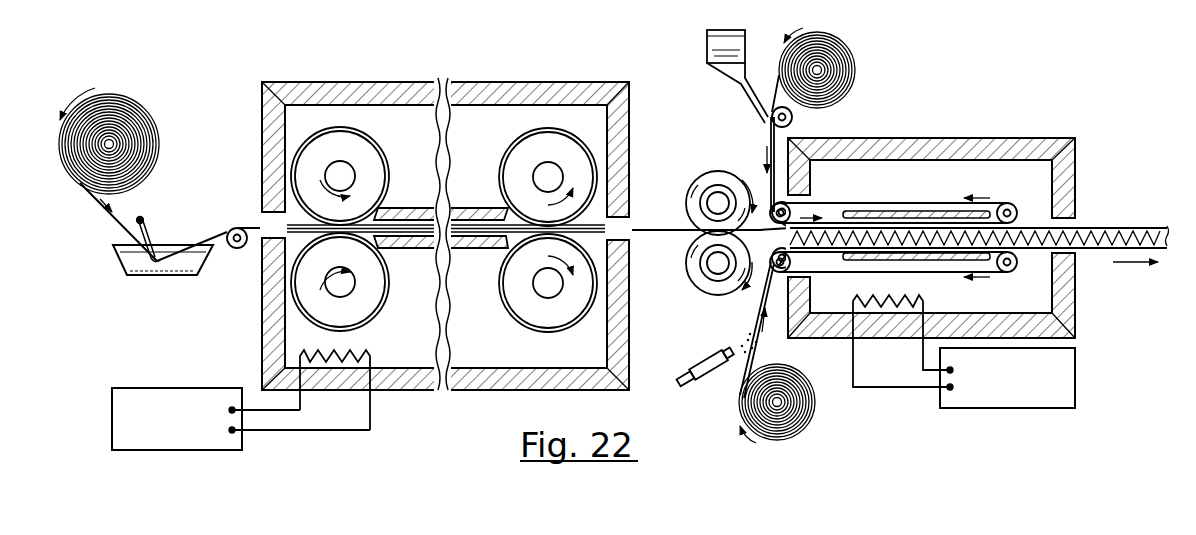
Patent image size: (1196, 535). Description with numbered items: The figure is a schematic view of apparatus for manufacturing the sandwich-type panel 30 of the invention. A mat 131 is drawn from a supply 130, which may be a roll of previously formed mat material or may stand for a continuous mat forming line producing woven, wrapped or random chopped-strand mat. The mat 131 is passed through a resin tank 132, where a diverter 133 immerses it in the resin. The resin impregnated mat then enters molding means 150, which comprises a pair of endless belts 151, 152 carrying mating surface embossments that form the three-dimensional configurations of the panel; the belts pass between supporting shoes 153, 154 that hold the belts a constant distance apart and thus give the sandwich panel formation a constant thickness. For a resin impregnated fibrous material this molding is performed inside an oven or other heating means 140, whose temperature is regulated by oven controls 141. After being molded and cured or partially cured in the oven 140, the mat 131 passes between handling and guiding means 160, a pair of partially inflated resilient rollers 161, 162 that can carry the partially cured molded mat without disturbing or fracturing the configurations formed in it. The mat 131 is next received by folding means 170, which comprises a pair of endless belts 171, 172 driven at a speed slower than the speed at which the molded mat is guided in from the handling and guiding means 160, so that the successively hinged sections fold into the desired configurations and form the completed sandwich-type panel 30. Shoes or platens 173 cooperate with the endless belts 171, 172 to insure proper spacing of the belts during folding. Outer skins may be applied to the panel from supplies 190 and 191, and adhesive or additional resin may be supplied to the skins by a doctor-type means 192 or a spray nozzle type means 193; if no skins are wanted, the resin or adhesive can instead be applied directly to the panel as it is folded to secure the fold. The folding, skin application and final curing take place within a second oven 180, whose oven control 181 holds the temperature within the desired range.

The sandwich-type panel 30 is at (1126, 221).
The supply 130 is at (143, 67).
The mat 131 is at (86, 203).
The resin tank 132 is at (120, 258).
The diverter 133 is at (172, 203).
The oven 140 is at (446, 236).
The oven controls 141 is at (232, 458).
The molding means 150 is at (444, 167).
The endless belt 151 is at (506, 126).
The endless belt 152 is at (476, 336).
The supporting shoe 153 is at (455, 255).
The supporting shoe 154 is at (491, 181).
The handling and guiding means 160 is at (695, 229).
The resilient roller 161 is at (700, 176).
The resilient roller 162 is at (703, 288).
The folding means 170 is at (905, 238).
The endless belt 171 is at (934, 200).
The endless belt 172 is at (999, 272).
The shoes or platens 173 is at (874, 207).
The oven 180 is at (923, 243).
The oven control 181 is at (922, 397).
The supply 190 is at (845, 50).
The supply 191 is at (742, 419).
The doctor-type means 192 is at (708, 66).
The spray nozzle type means 193 is at (703, 358).